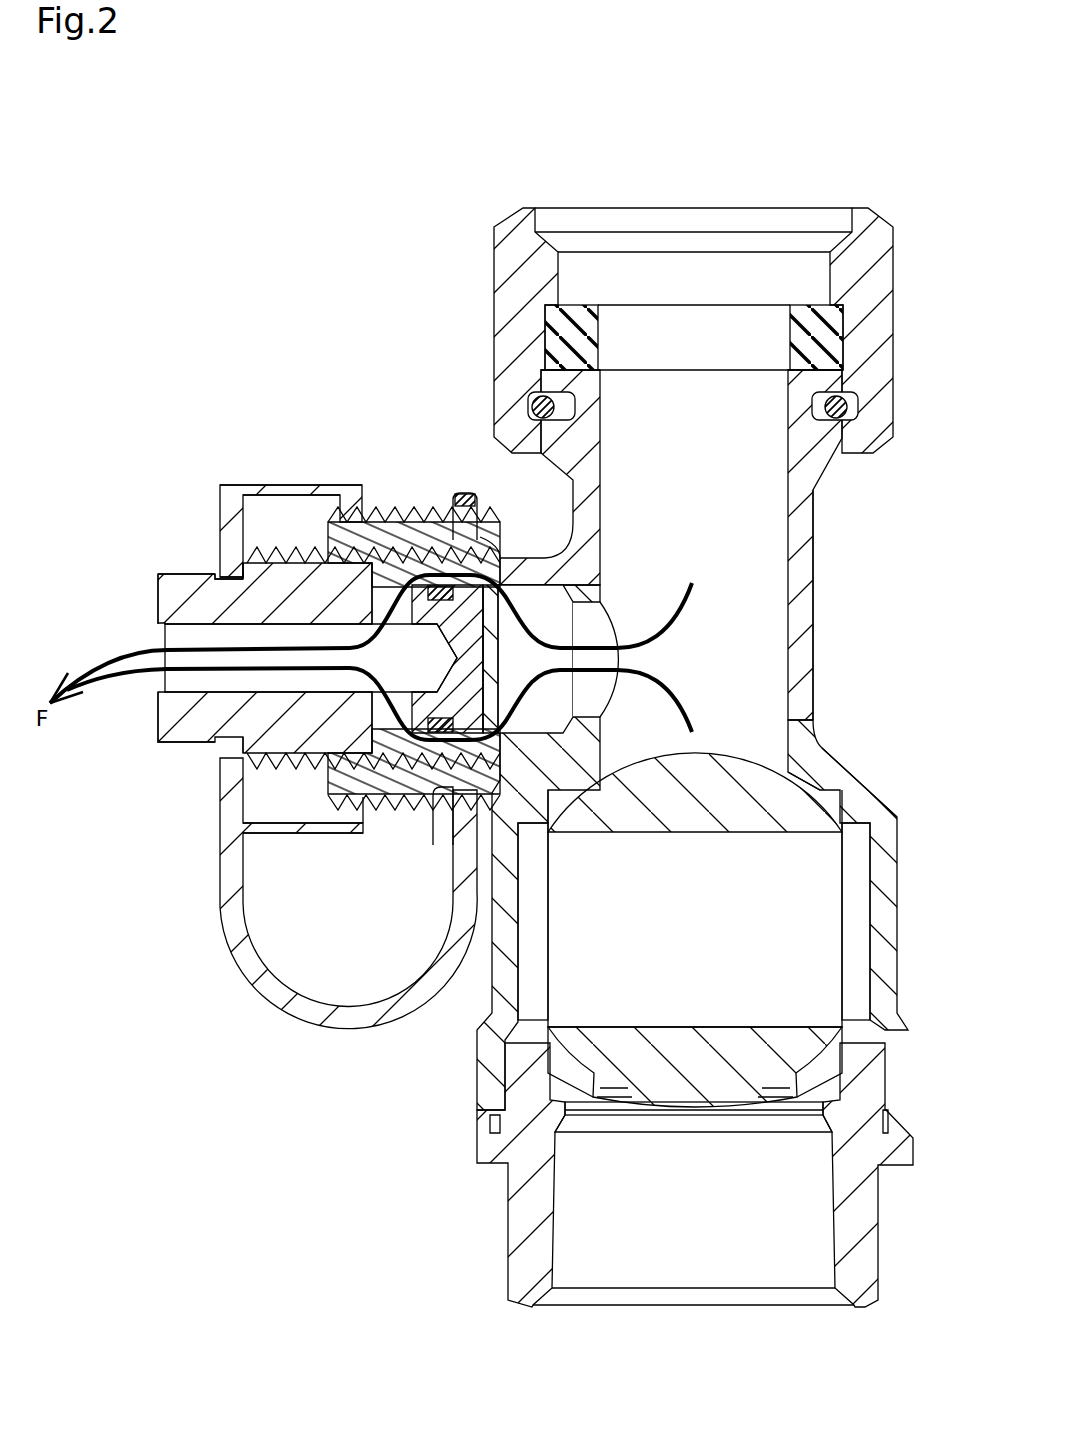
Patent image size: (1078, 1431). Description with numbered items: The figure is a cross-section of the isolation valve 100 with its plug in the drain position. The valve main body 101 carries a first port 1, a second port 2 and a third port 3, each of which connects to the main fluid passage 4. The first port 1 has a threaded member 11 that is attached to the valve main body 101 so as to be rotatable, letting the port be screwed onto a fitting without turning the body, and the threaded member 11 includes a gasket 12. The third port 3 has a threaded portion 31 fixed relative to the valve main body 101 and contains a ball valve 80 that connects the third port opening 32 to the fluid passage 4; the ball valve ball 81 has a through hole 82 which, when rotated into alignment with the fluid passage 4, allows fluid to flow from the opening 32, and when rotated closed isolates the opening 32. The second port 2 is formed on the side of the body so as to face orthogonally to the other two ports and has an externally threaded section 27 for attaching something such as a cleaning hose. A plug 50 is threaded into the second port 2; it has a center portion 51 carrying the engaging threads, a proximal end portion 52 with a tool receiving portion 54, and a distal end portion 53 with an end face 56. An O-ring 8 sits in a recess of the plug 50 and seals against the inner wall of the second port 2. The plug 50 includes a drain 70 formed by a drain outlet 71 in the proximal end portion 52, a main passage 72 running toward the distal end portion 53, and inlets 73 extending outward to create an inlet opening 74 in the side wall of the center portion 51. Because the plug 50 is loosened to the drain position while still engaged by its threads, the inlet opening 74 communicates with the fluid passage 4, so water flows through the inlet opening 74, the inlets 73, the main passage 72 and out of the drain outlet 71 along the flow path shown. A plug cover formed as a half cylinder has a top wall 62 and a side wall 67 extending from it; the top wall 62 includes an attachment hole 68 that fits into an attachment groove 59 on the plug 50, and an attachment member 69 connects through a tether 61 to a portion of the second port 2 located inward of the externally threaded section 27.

The isolation valve 100 is at (898, 104).
The first port 1 is at (512, 208).
The threaded member 11 is at (893, 345).
The gasket 12 is at (843, 332).
The fluid passage 4 is at (770, 618).
The valve main body 101 is at (813, 542).
The ball valve ball 81 is at (780, 745).
The ball valve 80 is at (897, 918).
The through hole 82 is at (830, 950).
The third port 3 is at (878, 1225).
The threaded portion 31 is at (830, 1290).
The third port opening 32 is at (548, 1305).
The distal end portion 53 is at (486, 658).
The end face 56 is at (495, 609).
The inlet 73 is at (404, 705).
The drain outlet 71 is at (160, 636).
The plug 50 is at (162, 745).
The proximal end portion 52 is at (186, 748).
The tool receiving portion 54 is at (175, 573).
The main passage 72 is at (250, 620).
The drain 70 is at (305, 600).
The center portion 51 is at (296, 765).
The second port 2 is at (385, 508).
The externally threaded section 27 is at (420, 520).
The attachment member 69 is at (462, 492).
The O-ring 8 is at (446, 787).
The top wall 62 is at (222, 505).
The side wall 67 is at (295, 485).
The attachment groove 59 is at (240, 572).
The tether 61 is at (345, 1028).
The attachment hole 68 is at (222, 795).
The inlet opening 74 is at (410, 790).